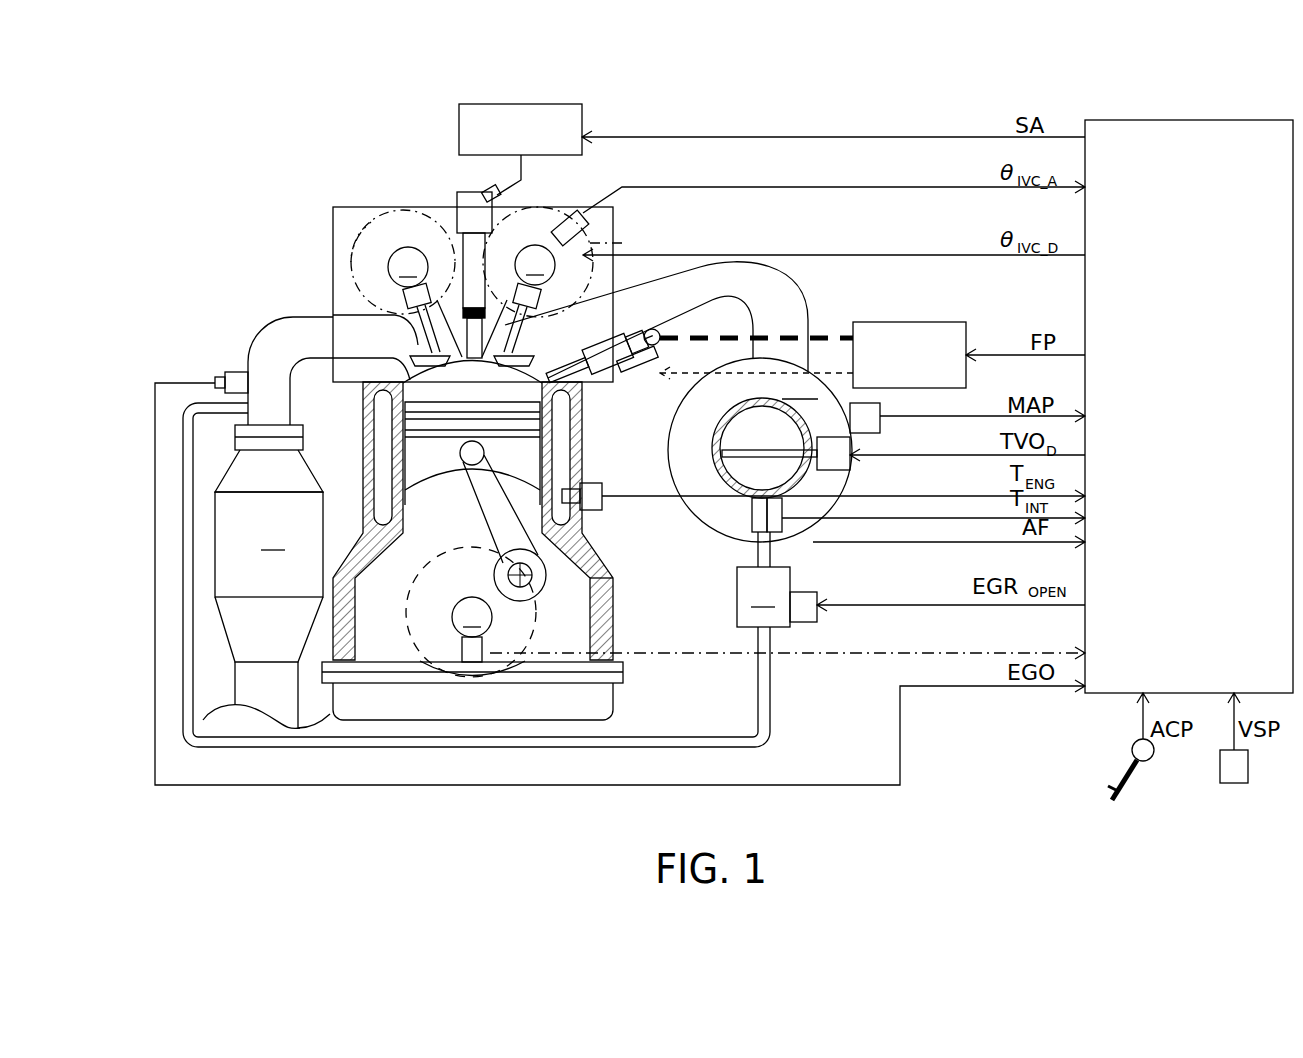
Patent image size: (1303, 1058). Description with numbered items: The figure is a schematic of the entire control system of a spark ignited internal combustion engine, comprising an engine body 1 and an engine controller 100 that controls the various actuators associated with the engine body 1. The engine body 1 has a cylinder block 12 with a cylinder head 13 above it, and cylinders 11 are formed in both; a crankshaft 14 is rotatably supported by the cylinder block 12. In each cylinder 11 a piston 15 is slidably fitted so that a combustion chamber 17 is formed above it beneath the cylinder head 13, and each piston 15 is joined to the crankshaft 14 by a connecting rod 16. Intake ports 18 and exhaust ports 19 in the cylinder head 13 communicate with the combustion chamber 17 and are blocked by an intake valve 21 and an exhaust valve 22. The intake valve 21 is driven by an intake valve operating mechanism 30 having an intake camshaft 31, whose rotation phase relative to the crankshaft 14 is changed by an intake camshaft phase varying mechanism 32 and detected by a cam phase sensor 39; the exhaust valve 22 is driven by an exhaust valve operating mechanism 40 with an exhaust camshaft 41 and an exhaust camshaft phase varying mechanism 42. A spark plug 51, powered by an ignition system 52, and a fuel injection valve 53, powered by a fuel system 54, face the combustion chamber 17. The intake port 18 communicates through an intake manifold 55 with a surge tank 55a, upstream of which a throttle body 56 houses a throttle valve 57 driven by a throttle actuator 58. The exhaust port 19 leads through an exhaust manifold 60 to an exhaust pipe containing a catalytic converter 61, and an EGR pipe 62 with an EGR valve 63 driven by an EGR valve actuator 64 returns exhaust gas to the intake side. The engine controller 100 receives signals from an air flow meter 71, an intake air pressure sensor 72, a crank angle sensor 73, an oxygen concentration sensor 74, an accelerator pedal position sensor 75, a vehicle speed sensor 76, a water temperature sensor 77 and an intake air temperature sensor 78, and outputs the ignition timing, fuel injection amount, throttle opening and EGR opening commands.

The engine body 1 is at (637, 697).
The cylinder 11 is at (397, 395).
The cylinder block 12 is at (613, 625).
The cylinder head 13 is at (360, 386).
The crankshaft 14 is at (471, 612).
The piston 15 is at (465, 475).
The connecting rod 16 is at (485, 515).
The combustion chamber 17 is at (460, 397).
The intake port 18 is at (579, 328).
The exhaust port 19 is at (347, 345).
The intake valve 21 is at (522, 360).
The exhaust valve 22 is at (420, 362).
The intake valve operating mechanism 30 is at (528, 222).
The intake camshaft 31 is at (535, 265).
The intake camshaft phase varying mechanism 32 is at (620, 243).
The cam phase sensor 39 is at (572, 212).
The exhaust valve operating mechanism 40 is at (400, 208).
The exhaust camshaft 41 is at (408, 267).
The exhaust camshaft phase varying mechanism 42 is at (352, 242).
The spark plug 51 is at (462, 305).
The ignition system 52 is at (585, 114).
The fuel injection valve 53 is at (598, 372).
The fuel system 54 is at (920, 322).
The intake manifold 55 is at (810, 322).
The surge tank 55a is at (760, 450).
The throttle body 56 is at (712, 432).
The throttle valve 57 is at (746, 465).
The throttle actuator 58 is at (850, 470).
The exhaust manifold 60 is at (300, 317).
The catalytic converter 61 is at (266, 576).
The EGR pipe 62 is at (772, 728).
The EGR valve 63 is at (763, 579).
The EGR valve actuator 64 is at (805, 592).
The air flow meter 71 is at (752, 515).
The intake air pressure sensor 72 is at (875, 433).
The crank angle sensor 73 is at (462, 655).
The oxygen concentration sensor 74 is at (237, 372).
The accelerator pedal position sensor 75 is at (1132, 750).
The vehicle speed sensor 76 is at (1220, 770).
The water temperature sensor 77 is at (602, 510).
The intake air temperature sensor 78 is at (782, 520).
The engine controller 100 is at (1215, 120).